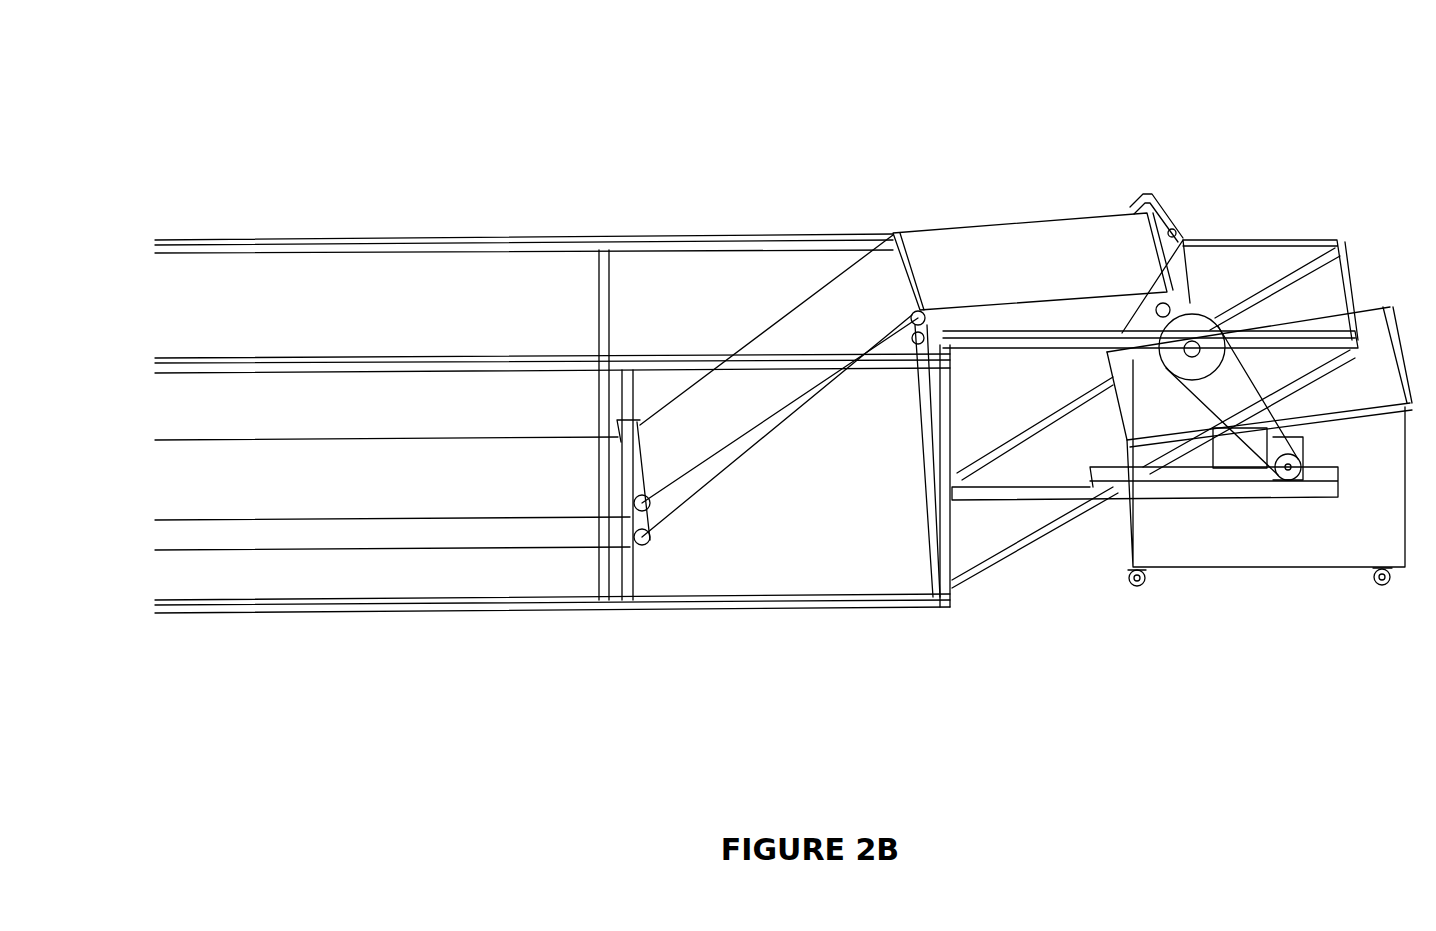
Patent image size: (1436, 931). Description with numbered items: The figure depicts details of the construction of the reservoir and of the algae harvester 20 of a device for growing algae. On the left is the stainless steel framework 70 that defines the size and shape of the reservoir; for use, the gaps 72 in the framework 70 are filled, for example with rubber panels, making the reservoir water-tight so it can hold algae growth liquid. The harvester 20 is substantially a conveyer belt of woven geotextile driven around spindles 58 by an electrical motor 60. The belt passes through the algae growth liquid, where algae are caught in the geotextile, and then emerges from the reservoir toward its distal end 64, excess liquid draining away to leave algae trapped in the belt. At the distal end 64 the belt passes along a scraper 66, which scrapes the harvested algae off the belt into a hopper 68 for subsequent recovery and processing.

The harvester 20 is at (1205, 113).
The spindles 58 is at (918, 312).
The electrical motor 60 is at (1237, 460).
The distal end 64 is at (1152, 98).
The scraper 66 is at (1165, 235).
The hopper 68 is at (1345, 518).
The framework 70 is at (537, 237).
The gaps 72 is at (380, 295).